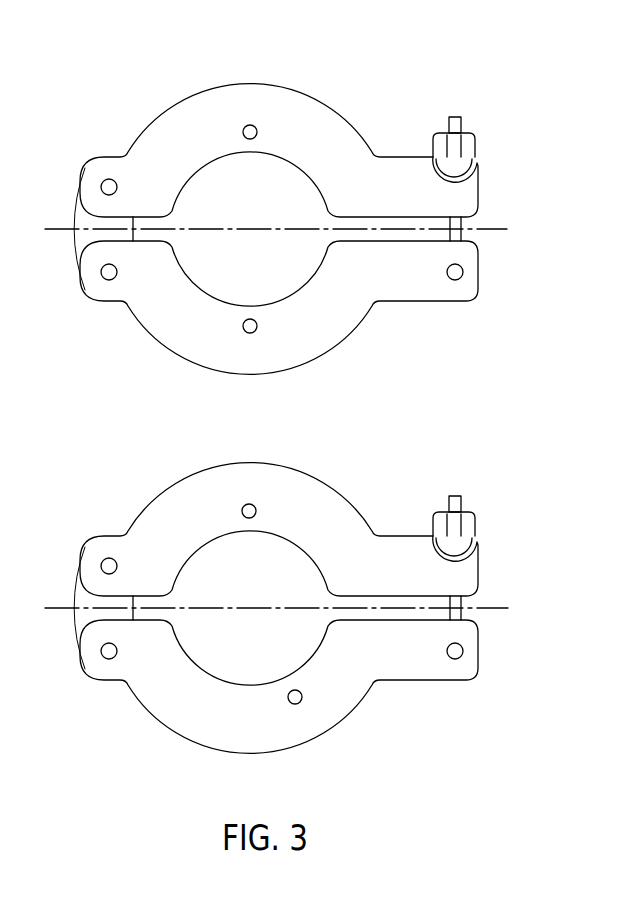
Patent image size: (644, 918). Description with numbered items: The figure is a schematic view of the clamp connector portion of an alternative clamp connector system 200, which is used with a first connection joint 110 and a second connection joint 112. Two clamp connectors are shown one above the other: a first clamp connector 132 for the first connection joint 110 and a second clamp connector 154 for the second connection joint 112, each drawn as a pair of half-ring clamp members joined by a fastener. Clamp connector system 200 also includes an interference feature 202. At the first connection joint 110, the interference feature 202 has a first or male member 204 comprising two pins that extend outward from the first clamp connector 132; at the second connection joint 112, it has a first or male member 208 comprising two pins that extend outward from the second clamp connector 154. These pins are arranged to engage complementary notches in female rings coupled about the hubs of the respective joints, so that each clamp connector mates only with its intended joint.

The clamp connector system 200 is at (333, 405).
The interference feature 202 is at (482, 74).
The first connection joint 110 is at (540, 124).
The second connection joint 112 is at (333, 605).
The first clamp connector 132 is at (480, 192).
The second clamp connector 154 is at (494, 558).
The first male member 204 is at (254, 125).
The first male member 208 is at (314, 605).